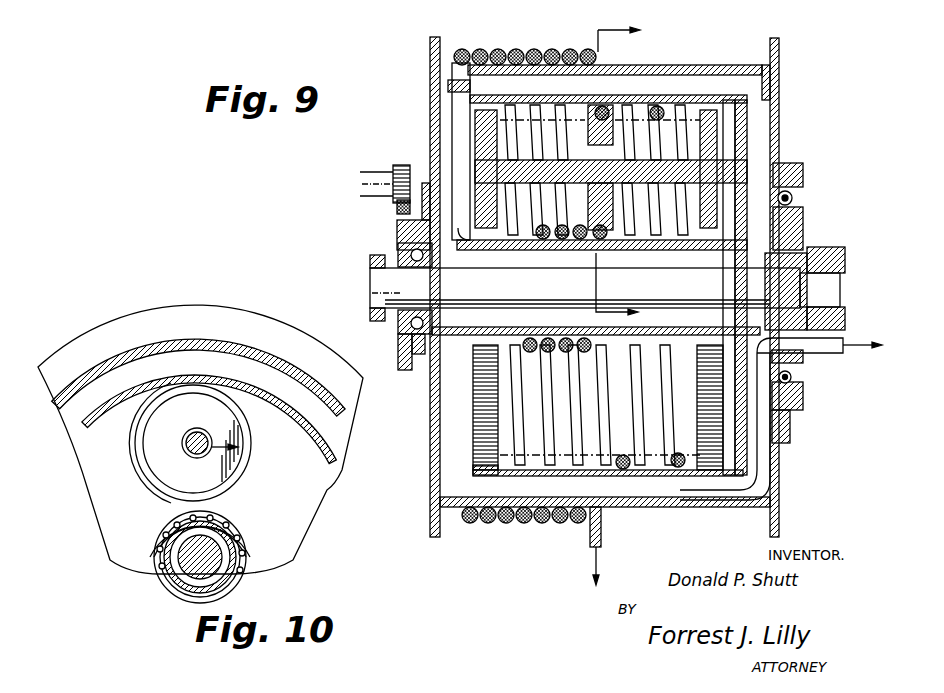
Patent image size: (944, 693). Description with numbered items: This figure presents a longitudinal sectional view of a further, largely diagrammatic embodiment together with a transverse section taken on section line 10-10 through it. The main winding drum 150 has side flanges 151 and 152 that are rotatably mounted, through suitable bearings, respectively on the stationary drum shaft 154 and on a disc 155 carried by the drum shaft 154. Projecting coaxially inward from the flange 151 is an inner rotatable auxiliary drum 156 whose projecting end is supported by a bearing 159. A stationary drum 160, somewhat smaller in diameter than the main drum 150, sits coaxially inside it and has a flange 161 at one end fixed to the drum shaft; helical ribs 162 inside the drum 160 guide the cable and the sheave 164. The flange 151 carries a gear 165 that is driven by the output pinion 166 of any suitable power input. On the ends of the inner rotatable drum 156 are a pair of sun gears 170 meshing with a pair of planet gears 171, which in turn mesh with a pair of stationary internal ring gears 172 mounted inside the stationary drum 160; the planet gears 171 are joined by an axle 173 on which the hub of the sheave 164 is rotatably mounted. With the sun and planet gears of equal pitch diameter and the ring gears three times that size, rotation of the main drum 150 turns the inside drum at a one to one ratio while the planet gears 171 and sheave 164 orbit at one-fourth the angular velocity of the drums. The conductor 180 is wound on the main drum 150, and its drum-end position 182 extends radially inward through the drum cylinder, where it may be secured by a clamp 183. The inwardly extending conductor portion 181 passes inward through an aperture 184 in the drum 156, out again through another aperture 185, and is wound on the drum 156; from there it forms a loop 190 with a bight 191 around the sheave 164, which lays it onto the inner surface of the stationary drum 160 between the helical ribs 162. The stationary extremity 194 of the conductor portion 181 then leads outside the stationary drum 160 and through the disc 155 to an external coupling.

In FIG. 9, the section line 10- 10 is at (630, 176).
In FIG. 9, the main winding drum 150 is at (672, 65).
In FIG. 10, the main winding drum 150 is at (236, 340).
In FIG. 9, the side flange 151 is at (430, 104).
In FIG. 9, the side flange 152 is at (779, 132).
In FIG. 10, the side flange 152 is at (190, 312).
In FIG. 9, the drum shaft 154 is at (370, 290).
In FIG. 10, the drum shaft 154 is at (200, 585).
In FIG. 9, the disc 155 is at (803, 214).
In FIG. 9, the inner rotatable auxiliary drum 156 is at (640, 340).
In FIG. 10, the inner rotatable auxiliary drum 156 is at (165, 560).
In FIG. 9, the bearing 159 is at (790, 230).
In FIG. 10, the bearing 159 is at (245, 530).
In FIG. 9, the stationary drum 160 is at (682, 96).
In FIG. 9, the flange 161 is at (845, 252).
In FIG. 9, the helical ribs 162 is at (545, 106).
In FIG. 9, the sheave 164 is at (612, 113).
In FIG. 10, the sheave 164 is at (240, 480).
In FIG. 9, the gear 165 is at (397, 212).
In FIG. 9, the output pinion 166 is at (395, 168).
In FIG. 9, the sun gears 170 is at (480, 355).
In FIG. 9, the planet gears 171 is at (485, 206).
In FIG. 9, the stationary internal ring gears 172 is at (530, 105).
In FIG. 9, the axle 173 is at (740, 175).
In FIG. 10, the axle 173 is at (210, 418).
In FIG. 9, the conductor 180 is at (520, 48).
In FIG. 9, the inwardly extending conductor portion 181 is at (520, 250).
In FIG. 9, the drum-end position 182 is at (452, 132).
In FIG. 9, the clamp 183 is at (478, 88).
In FIG. 9, the aperture 184 is at (452, 252).
In FIG. 9, the aperture 185 is at (525, 252).
In FIG. 10, the loop 190 is at (298, 428).
In FIG. 10, the bight 191 is at (150, 492).
In FIG. 9, the stationary extremity 194 is at (770, 470).